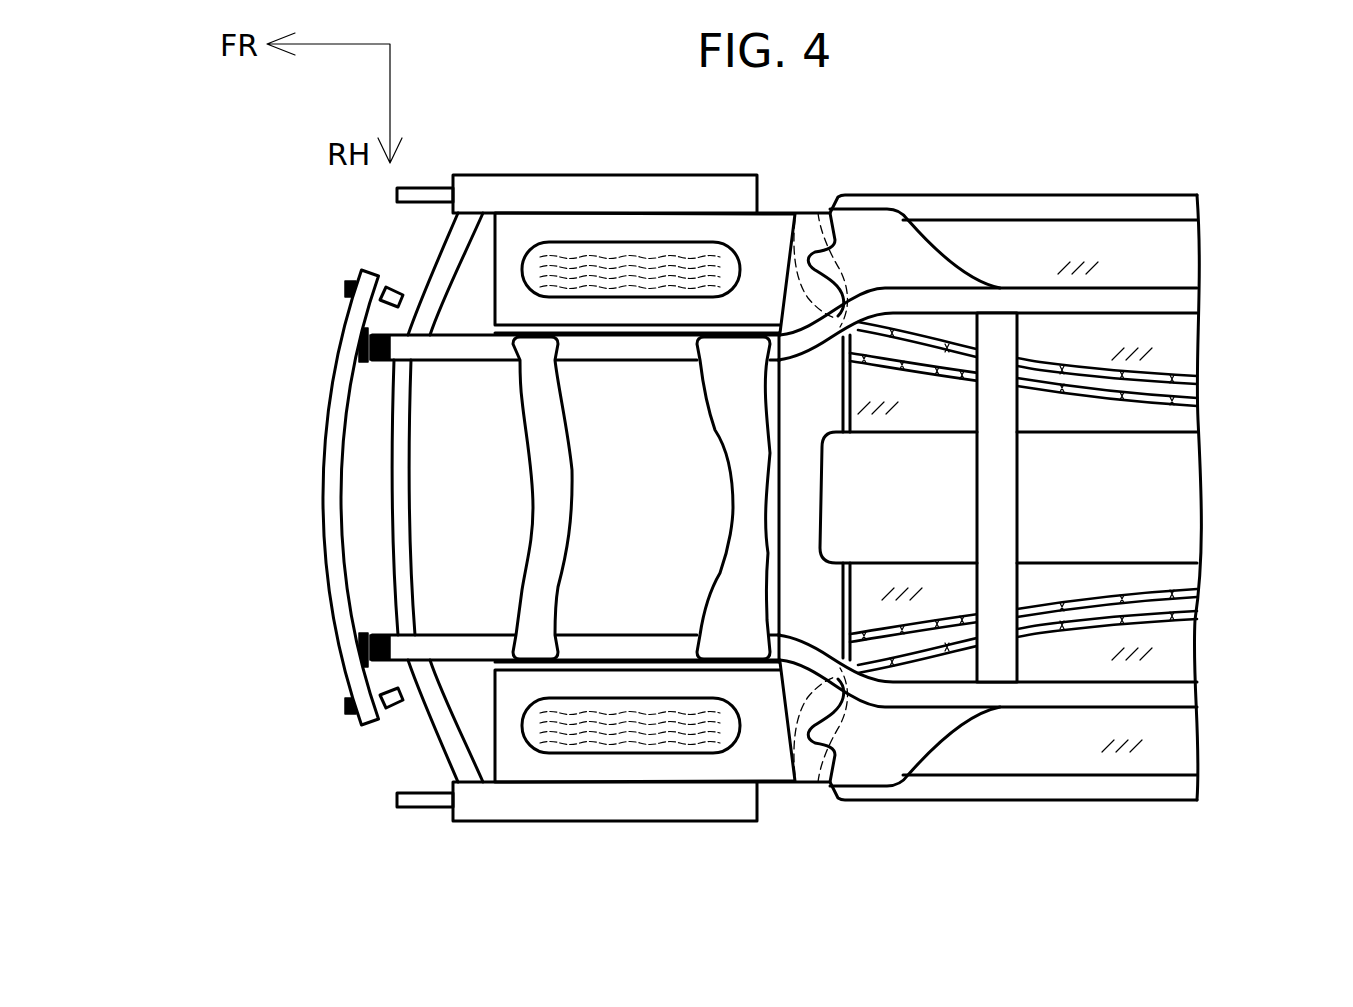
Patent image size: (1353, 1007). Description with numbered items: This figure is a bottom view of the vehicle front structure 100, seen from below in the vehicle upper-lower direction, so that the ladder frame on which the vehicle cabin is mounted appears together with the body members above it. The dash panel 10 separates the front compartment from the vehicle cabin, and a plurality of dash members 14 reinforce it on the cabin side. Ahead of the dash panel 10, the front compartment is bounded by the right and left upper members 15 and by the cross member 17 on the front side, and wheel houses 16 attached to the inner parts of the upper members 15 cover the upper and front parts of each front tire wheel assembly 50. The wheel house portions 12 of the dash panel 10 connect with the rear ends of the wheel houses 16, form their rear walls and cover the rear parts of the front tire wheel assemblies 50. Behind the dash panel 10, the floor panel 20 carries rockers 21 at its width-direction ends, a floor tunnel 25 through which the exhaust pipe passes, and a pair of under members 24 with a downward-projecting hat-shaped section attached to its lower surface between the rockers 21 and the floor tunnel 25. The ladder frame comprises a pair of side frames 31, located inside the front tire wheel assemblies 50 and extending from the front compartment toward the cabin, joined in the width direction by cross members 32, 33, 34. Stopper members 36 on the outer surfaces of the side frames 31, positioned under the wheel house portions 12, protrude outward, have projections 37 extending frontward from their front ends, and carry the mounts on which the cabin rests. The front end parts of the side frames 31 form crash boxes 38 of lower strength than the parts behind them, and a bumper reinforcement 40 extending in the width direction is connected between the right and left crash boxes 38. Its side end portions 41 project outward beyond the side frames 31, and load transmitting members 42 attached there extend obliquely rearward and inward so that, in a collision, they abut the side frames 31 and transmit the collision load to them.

The vehicle front structure 100 is at (221, 182).
The dash panel 10 is at (768, 755).
The wheel house portions 12 is at (807, 240).
The dash members 14 is at (835, 232).
The upper members 15 is at (683, 175).
The wheel houses 16 is at (760, 243).
The cross member 17 is at (435, 268).
The floor panel 20 is at (1180, 651).
The rockers 21 is at (1153, 797).
The under members 24 is at (1177, 590).
The floor tunnel 25 is at (1155, 432).
The side frames 31 is at (613, 636).
The cross member 32 is at (533, 468).
The cross member 33 is at (731, 510).
The cross member 34 is at (1000, 497).
The stopper members 36 is at (950, 740).
The projections 37 is at (817, 780).
The crash boxes 38 is at (389, 614).
The bumper reinforcement 40 is at (333, 620).
The side end portions 41 is at (347, 687).
The load transmitting members 42 is at (398, 707).
The front tire wheel assembly 50 is at (676, 778).